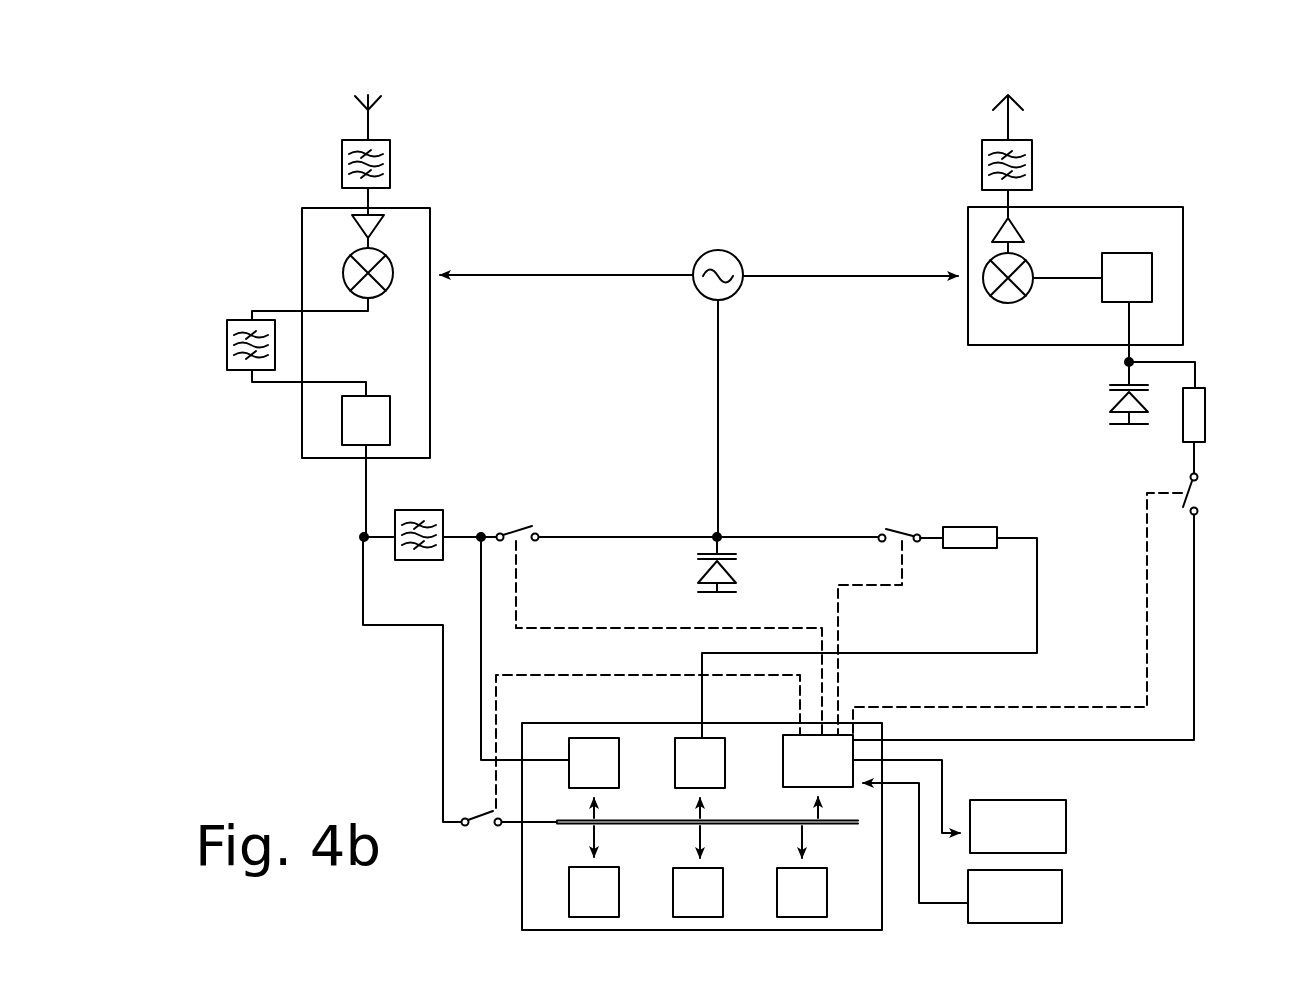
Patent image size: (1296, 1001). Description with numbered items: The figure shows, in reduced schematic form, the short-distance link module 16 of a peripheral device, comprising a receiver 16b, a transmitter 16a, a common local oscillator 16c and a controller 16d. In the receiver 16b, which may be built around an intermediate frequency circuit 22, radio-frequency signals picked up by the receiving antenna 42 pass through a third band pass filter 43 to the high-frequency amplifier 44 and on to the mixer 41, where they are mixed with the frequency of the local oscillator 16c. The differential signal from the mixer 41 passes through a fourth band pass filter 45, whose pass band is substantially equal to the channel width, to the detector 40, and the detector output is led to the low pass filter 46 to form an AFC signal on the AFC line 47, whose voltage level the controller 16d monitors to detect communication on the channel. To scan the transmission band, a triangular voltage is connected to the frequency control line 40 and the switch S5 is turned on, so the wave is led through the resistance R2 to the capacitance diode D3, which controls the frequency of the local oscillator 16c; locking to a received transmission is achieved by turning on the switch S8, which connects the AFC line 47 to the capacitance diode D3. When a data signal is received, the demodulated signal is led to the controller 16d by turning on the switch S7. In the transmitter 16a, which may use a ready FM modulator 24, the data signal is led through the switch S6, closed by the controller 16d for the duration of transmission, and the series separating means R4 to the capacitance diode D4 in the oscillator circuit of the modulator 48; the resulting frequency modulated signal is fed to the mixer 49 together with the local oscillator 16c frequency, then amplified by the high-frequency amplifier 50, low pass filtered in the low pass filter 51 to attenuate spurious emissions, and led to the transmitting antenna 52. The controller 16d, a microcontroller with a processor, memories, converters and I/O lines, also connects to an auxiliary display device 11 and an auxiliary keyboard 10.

The auxiliary keyboard 10 is at (1062, 896).
The auxiliary display device 11 is at (1066, 826).
The short-distance link module of the peripheral device 16 is at (350, 663).
The transmitter 16a is at (512, 191).
The receiver 16b is at (802, 188).
The local oscillator 16c is at (708, 249).
The controller 16d is at (522, 904).
The intermediate frequency circuit 22 is at (302, 232).
The FM modulator 24 is at (1142, 207).
The frequency control line / detector 40 is at (1080, 576).
The mixer 41 is at (343, 274).
The receiving antenna 42 is at (360, 116).
The third band pass filter 43 is at (342, 163).
The high-frequency amplifier 44 is at (380, 224).
The fourth band pass filter 45 is at (227, 345).
The low pass filter 46 is at (447, 510).
The AFC line 47 is at (630, 537).
The modulator 48 is at (1153, 294).
The mixer of the transmitter 49 is at (985, 312).
The high-frequency amplifier of the transmitter 50 is at (990, 236).
The low pass filter 51 is at (982, 165).
The transmitting antenna 52 is at (1000, 108).
The capacitance diode D3 is at (739, 566).
The capacitance diode D4 is at (1110, 395).
The resistance R2 is at (970, 523).
The separating means R4 is at (1207, 400).
The switch S5 is at (890, 619).
The switch S6 is at (1025, 605).
The switch S7 is at (581, 704).
The switch S8 is at (660, 617).